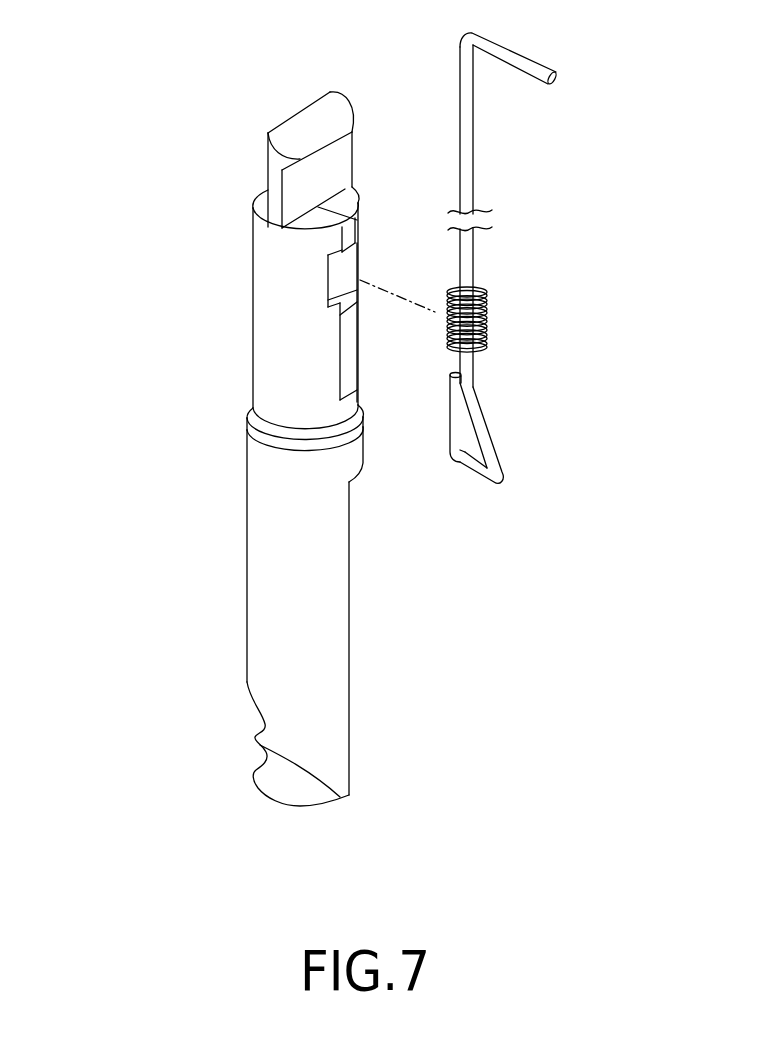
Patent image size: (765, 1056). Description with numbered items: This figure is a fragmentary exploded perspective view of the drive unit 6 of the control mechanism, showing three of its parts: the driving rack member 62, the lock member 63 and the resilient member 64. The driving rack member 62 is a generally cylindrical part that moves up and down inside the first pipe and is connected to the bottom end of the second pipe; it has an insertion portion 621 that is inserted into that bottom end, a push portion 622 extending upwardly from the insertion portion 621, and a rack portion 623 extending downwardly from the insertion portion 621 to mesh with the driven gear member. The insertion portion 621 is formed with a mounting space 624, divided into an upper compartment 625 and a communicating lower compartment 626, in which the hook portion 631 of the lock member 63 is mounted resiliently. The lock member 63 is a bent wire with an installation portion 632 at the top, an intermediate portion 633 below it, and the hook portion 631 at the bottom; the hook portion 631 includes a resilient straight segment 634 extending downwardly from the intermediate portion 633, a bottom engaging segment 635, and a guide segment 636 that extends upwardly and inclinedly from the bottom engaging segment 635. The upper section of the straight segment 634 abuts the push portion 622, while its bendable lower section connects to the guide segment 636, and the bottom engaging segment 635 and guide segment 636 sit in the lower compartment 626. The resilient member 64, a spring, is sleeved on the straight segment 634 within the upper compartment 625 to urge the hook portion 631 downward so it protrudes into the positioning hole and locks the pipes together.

The drive unit 6 is at (162, 108).
The driving rack member 62 is at (177, 545).
The insertion portion 621 is at (269, 392).
The push portion 622 is at (327, 131).
The rack portion 623 is at (340, 795).
The mounting space 624 is at (170, 222).
The upper compartment 625 is at (340, 280).
The lower compartment 626 is at (347, 353).
The lock member 63 is at (535, 202).
The hook portion 631 is at (512, 480).
The installation portion 632 is at (527, 62).
The intermediate portion 633 is at (467, 127).
The resilient straight segment 634 is at (468, 262).
The bottom engaging segment 635 is at (473, 463).
The guide segment 636 is at (485, 430).
The resilient member 64 is at (488, 327).